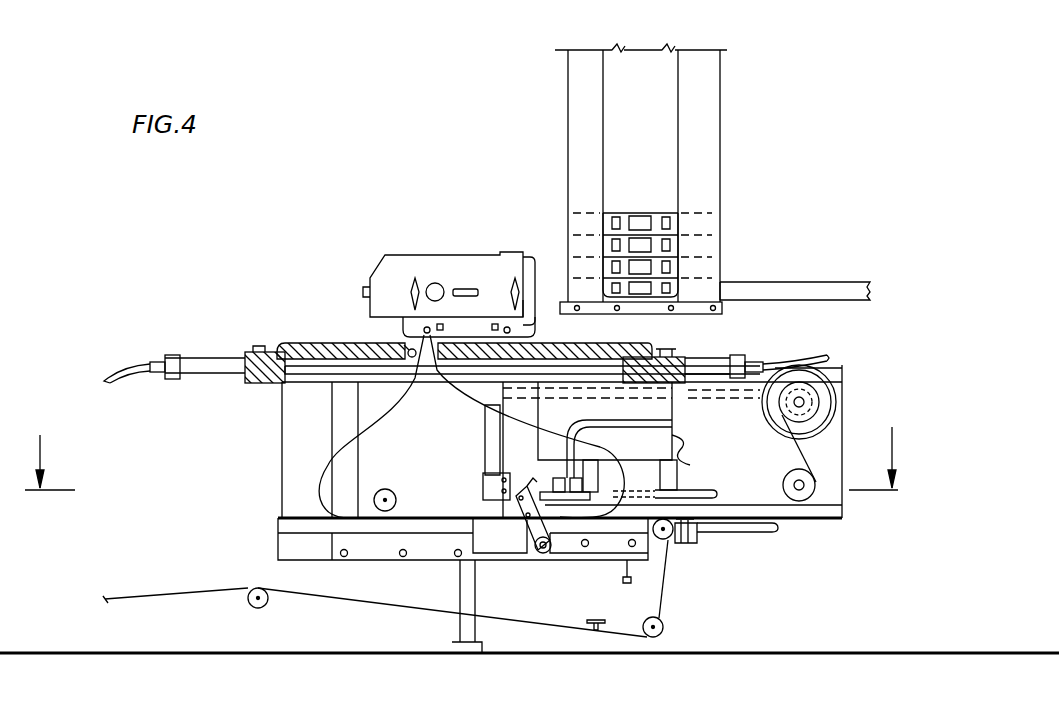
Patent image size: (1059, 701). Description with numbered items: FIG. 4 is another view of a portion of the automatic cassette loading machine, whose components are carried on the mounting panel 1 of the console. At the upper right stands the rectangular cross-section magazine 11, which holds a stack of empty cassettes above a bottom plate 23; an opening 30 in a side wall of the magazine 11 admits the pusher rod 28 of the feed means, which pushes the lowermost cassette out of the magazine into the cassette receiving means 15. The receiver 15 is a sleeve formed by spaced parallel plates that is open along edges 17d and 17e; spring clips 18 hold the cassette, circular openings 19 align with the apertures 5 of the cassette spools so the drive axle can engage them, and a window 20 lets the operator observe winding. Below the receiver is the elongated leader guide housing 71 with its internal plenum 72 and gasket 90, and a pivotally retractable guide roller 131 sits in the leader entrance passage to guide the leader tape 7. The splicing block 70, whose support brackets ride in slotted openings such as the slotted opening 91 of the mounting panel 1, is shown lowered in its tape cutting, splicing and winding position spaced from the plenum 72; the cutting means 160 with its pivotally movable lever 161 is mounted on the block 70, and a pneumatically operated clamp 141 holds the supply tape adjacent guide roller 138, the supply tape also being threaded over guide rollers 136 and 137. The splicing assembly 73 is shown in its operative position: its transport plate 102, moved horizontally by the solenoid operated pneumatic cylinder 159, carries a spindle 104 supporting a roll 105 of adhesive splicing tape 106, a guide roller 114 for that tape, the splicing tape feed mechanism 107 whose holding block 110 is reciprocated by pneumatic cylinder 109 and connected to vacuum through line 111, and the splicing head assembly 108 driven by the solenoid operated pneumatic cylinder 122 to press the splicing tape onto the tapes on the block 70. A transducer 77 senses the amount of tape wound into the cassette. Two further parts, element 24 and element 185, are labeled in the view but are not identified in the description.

The mounting panel 1 is at (201, 544).
The aperture 5 is at (461, 457).
The leader tape 7 is at (378, 425).
The magazine 11 is at (720, 190).
The cassette receiving means 15 is at (380, 265).
The edge 17d is at (366, 292).
The edge 17e is at (523, 275).
The spring clip 18 is at (410, 304).
The circular opening 19 is at (437, 283).
The window 20 is at (465, 288).
The bottom plate 23 is at (726, 309).
The block bottom plate 24 is at (528, 322).
The pusher rod 28 is at (816, 282).
The opening 30 is at (727, 282).
The splicing block 70 is at (283, 512).
The leader guide housing 71 is at (292, 343).
The plenum 72 is at (305, 374).
The splicing assembly 73 is at (880, 477).
The transducer 77 is at (594, 620).
The gasket 90 is at (292, 381).
The slotted opening 91 is at (340, 437).
The transport plate 102 is at (843, 512).
The spindle 104 is at (802, 402).
The roll 105 is at (817, 410).
The adhesive splicing tape 106 is at (797, 452).
The splicing tape feed mechanism 107 is at (598, 468).
The splicing head assembly 108 is at (484, 495).
The pneumatic cylinder 109 is at (688, 450).
The splicing tape holding block 110 is at (548, 480).
The line 111 is at (575, 424).
The guide roller 114 is at (803, 492).
The solenoid operated pneumatic cylinder 122 is at (485, 448).
The guide roller 131 is at (400, 334).
The guide roller 136 is at (260, 608).
The guide roller 137 is at (665, 630).
The guide roller 138 is at (668, 540).
The pneumatically operated clamp 141 is at (772, 534).
The solenoid operated pneumatic cylinder 159 is at (672, 398).
The cutting means 160 is at (540, 555).
The lever 161 is at (510, 527).
The pulley 185 is at (388, 496).